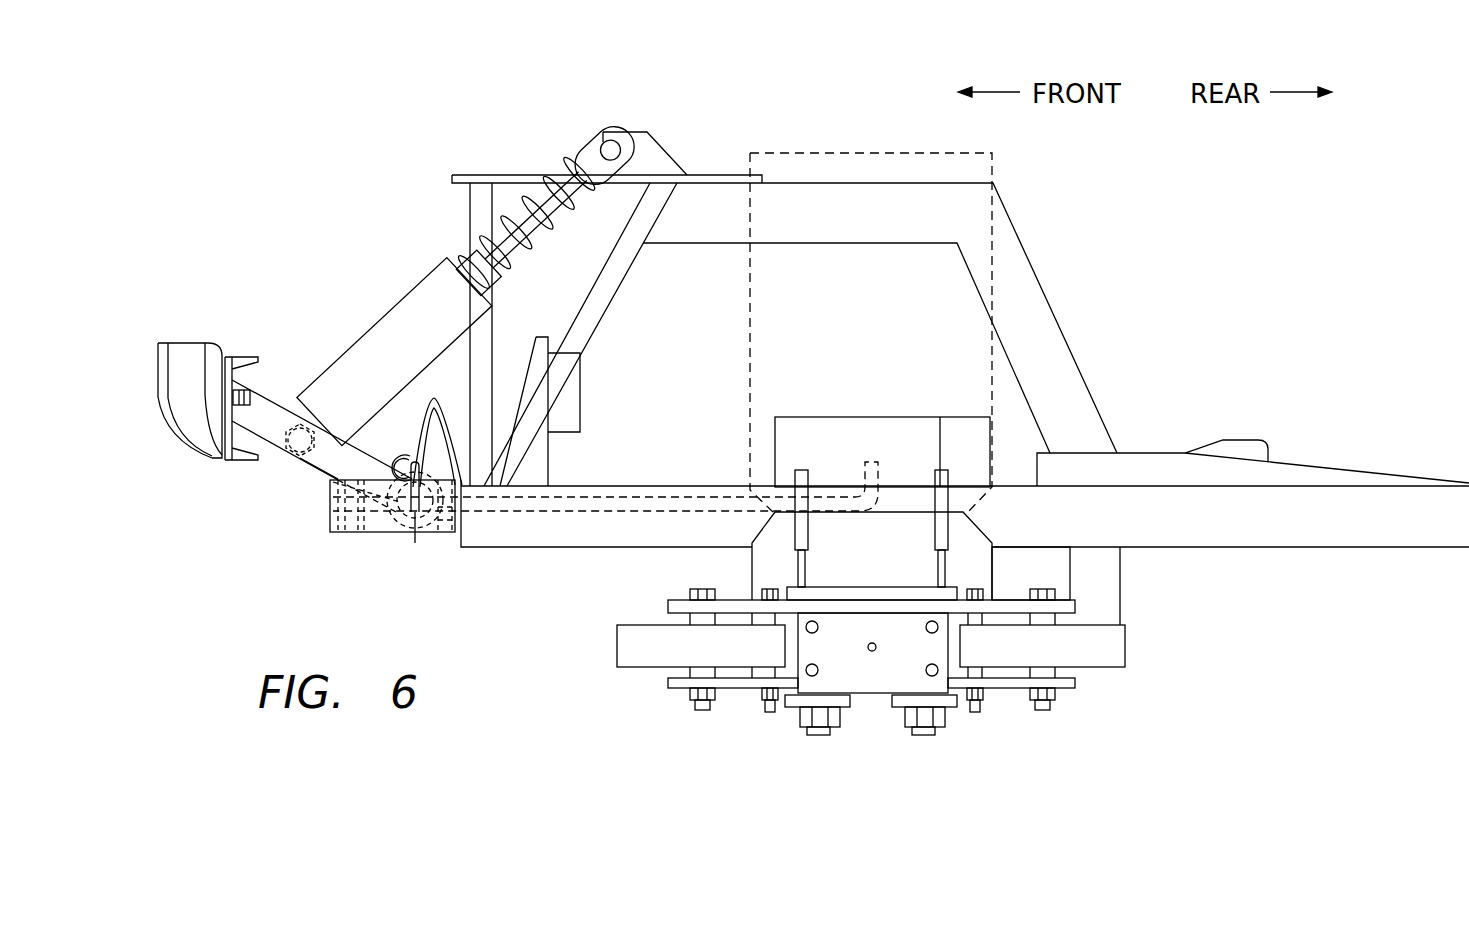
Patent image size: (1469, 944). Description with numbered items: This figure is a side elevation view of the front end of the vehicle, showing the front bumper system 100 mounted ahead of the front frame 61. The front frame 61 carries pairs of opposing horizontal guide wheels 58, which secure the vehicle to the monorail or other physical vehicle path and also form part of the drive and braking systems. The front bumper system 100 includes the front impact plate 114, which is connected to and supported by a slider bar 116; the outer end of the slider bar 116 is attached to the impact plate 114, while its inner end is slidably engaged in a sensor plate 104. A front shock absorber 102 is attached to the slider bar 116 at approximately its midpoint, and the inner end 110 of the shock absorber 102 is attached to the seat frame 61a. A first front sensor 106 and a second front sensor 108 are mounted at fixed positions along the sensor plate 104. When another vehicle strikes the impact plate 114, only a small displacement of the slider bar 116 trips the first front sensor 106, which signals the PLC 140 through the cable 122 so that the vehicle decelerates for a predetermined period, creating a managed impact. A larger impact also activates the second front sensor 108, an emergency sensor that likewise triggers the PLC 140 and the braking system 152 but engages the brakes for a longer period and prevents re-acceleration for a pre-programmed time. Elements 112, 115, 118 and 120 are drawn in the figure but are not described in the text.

The guide wheels 58 is at (1112, 643).
The front frame 61 is at (1350, 532).
The seat frame 61a is at (1045, 337).
The front bumper system 100 is at (408, 255).
The front shock absorber 102 is at (393, 328).
The sensor plate 104 is at (350, 527).
The first front sensor 106 is at (427, 537).
The second front sensor 108 is at (443, 523).
The inner end of the shock absorber 110 is at (603, 132).
The link arm 112 is at (303, 413).
The front impact plate 114 is at (183, 352).
The bumper face 115 is at (170, 437).
The slider bar 116 is at (333, 460).
The pivot bushing 118 is at (393, 517).
The bumper bracket 120 is at (247, 417).
The cable 122 is at (417, 413).
The PLC 140 is at (866, 152).
The braking system 152 is at (858, 417).